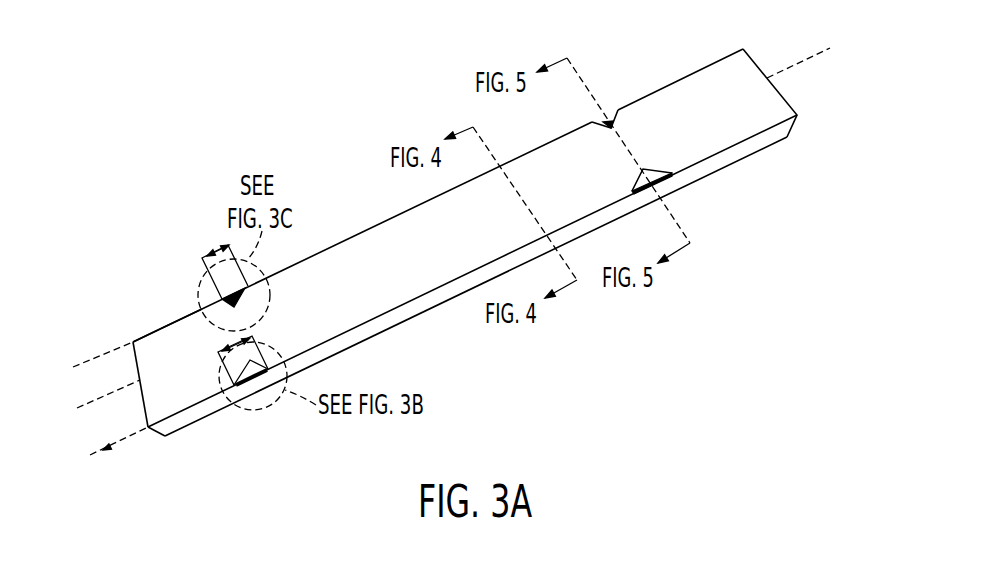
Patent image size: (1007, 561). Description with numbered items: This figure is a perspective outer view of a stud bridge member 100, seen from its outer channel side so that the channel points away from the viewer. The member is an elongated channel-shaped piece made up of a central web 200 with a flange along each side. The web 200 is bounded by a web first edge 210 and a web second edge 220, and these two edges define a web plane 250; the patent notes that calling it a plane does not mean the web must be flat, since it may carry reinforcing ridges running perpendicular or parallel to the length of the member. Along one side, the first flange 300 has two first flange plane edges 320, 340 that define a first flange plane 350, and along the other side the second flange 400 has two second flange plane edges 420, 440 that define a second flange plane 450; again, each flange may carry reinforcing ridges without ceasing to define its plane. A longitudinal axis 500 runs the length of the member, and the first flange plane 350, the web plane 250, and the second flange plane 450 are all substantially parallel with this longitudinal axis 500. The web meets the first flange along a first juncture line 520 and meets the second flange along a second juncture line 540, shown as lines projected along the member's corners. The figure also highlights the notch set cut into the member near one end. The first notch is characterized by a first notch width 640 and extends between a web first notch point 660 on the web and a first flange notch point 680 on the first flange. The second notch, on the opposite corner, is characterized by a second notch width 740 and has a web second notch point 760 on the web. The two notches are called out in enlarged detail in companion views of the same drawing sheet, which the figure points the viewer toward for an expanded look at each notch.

The stud bridge member 100 is at (355, 168).
The web 200 is at (558, 176).
The web first edge 210 is at (502, 255).
The web second edge 220 is at (427, 201).
The web plane on the outer side 250 is at (349, 240).
The first flange 300 is at (770, 133).
The first flange first edge 320 is at (148, 429).
The first flange second edge 340 is at (165, 438).
The first flange plane 350 is at (427, 309).
The second flange 400 is at (748, 50).
The second flange first edge 420 is at (182, 317).
The second flange second edge 440 is at (140, 337).
The second flange plane 450 is at (723, 55).
The longitudinal axis 500 is at (77, 408).
The first juncture line 520 is at (103, 450).
The second juncture line 540 is at (84, 362).
The first notch width 640 is at (221, 351).
The web first notch point 660 is at (257, 350).
The first flange notch point 680 is at (254, 404).
The second notch width 740 is at (216, 250).
The web second notch point 760 is at (268, 293).